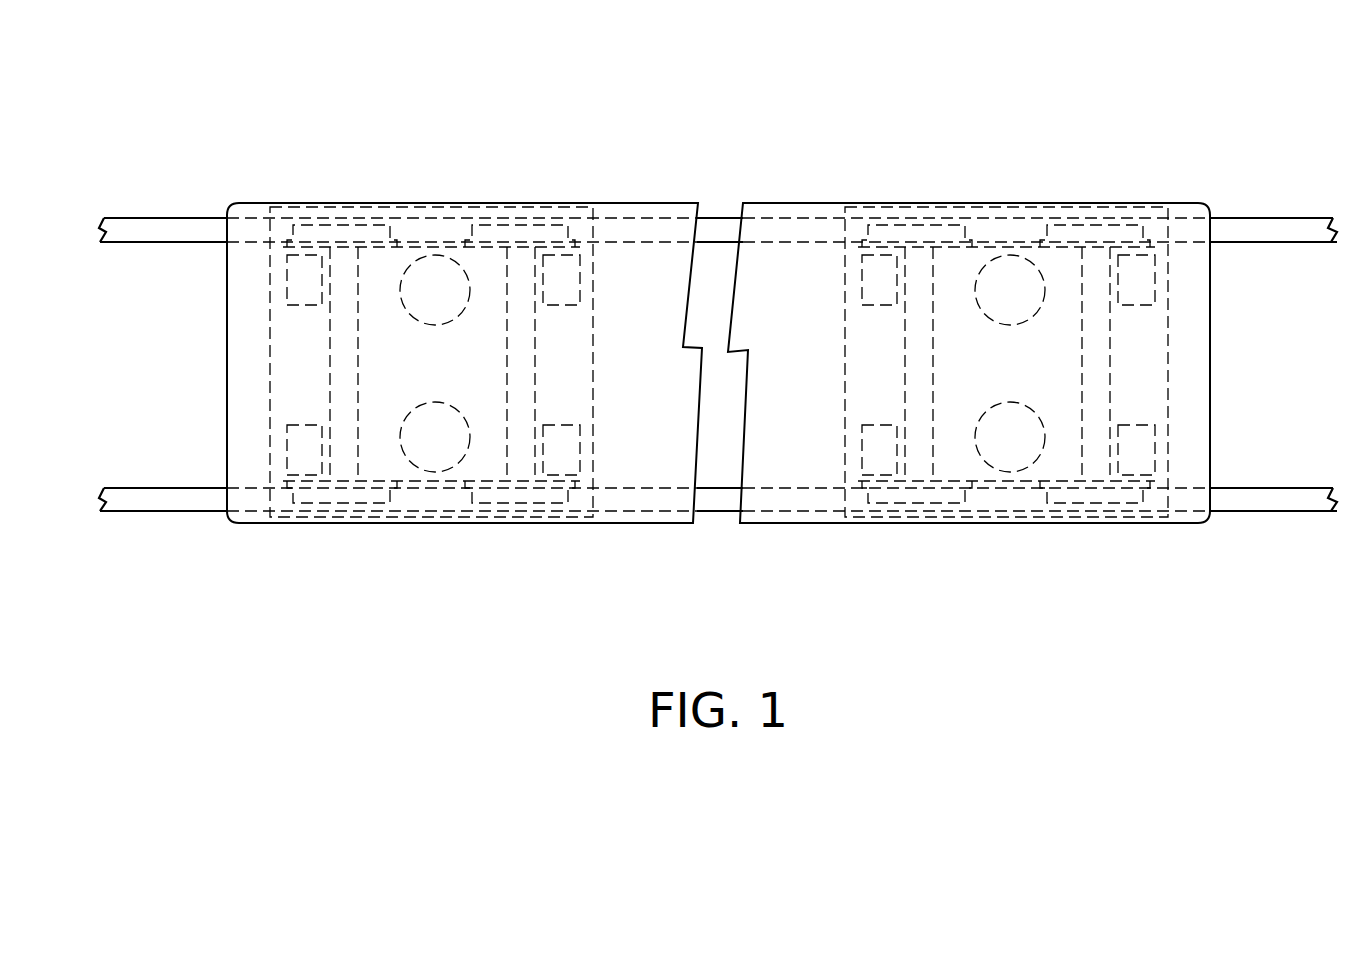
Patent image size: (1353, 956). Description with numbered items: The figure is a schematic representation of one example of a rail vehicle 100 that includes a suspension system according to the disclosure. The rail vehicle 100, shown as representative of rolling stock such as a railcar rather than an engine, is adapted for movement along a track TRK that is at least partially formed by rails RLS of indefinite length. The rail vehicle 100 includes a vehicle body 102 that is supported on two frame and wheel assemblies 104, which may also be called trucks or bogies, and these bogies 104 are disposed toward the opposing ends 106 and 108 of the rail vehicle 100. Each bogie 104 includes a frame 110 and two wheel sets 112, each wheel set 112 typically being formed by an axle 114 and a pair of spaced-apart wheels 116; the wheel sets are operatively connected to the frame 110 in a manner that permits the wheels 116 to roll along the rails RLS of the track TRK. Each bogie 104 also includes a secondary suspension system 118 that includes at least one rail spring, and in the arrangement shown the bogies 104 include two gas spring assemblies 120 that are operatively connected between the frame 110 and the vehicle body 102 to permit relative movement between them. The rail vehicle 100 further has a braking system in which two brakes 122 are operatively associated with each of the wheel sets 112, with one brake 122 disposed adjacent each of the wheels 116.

The rail vehicle 100 is at (1067, 120).
The vehicle body 102 is at (778, 200).
The frame and wheel assembly 104 is at (483, 410).
The end 106 is at (243, 185).
The end 108 is at (1220, 190).
The frame 110 is at (290, 520).
The wheel set 112 is at (326, 340).
The axle 114 is at (328, 398).
The wheel 116 is at (318, 226).
The secondary suspension system 118 is at (466, 362).
The gas spring assembly 120 is at (436, 255).
The brake 122 is at (287, 280).
The rails RLS is at (152, 218).
The track TRK is at (108, 526).